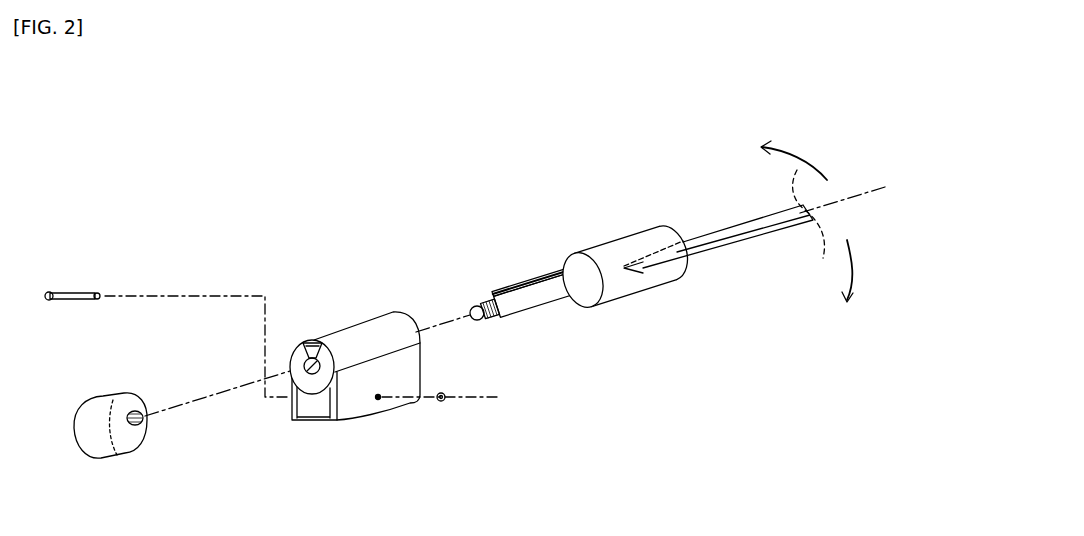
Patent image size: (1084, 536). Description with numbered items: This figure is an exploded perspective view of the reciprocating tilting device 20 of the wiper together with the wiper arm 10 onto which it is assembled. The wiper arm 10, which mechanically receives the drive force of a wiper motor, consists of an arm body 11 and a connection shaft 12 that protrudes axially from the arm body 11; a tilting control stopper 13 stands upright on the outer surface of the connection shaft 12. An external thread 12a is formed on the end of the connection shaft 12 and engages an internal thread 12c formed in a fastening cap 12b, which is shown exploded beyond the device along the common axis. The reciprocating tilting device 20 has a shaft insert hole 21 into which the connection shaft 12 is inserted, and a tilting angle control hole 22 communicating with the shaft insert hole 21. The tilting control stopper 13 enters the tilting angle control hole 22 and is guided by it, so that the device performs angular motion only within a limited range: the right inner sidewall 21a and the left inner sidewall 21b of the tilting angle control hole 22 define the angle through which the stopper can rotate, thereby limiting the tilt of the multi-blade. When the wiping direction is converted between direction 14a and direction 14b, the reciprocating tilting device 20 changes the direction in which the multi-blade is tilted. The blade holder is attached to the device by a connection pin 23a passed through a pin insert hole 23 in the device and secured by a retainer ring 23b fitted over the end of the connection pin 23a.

The wiper arm 10 is at (617, 238).
The arm body 11 is at (660, 280).
The connection shaft 12 is at (527, 304).
The external thread 12a is at (473, 305).
The fastening cap 12b is at (84, 447).
The internal thread 12c is at (143, 440).
The tilting control stopper 13 is at (542, 282).
The wiping direction 14a is at (787, 150).
The wiping direction 14b is at (867, 307).
The reciprocating tilting device 20 is at (370, 308).
The shaft insert hole 21 is at (310, 375).
The right inner sidewall 21a is at (297, 360).
The left inner sidewall 21b is at (316, 340).
The tilting angle control hole 22 is at (318, 342).
The pin insert hole 23 is at (378, 400).
The connection pin 23a is at (50, 291).
The retainer ring 23b is at (443, 401).